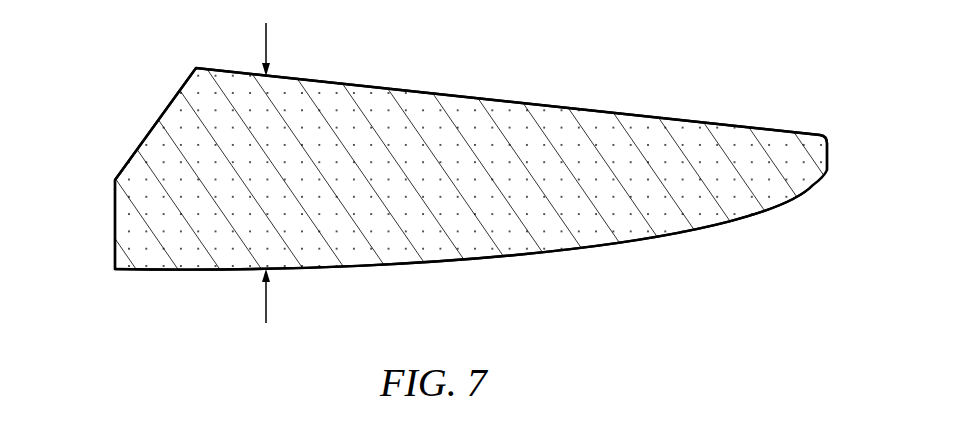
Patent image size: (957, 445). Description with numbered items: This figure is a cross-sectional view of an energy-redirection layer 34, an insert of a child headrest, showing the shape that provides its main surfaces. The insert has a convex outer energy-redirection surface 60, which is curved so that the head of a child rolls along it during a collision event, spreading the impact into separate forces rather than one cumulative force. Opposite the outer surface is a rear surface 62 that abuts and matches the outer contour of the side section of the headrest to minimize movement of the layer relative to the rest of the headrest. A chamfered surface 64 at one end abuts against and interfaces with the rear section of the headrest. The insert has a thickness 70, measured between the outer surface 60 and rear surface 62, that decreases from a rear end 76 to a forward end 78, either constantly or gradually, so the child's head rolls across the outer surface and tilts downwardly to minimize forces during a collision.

The energy-redirection layer 34 is at (698, 63).
The convex outer energy-redirection surface 60 is at (482, 261).
The rear surface 62 is at (483, 100).
The chamfered surface 64 is at (155, 123).
The thickness 70 is at (266, 35).
The rear end 76 is at (115, 180).
The forward end 78 is at (829, 157).